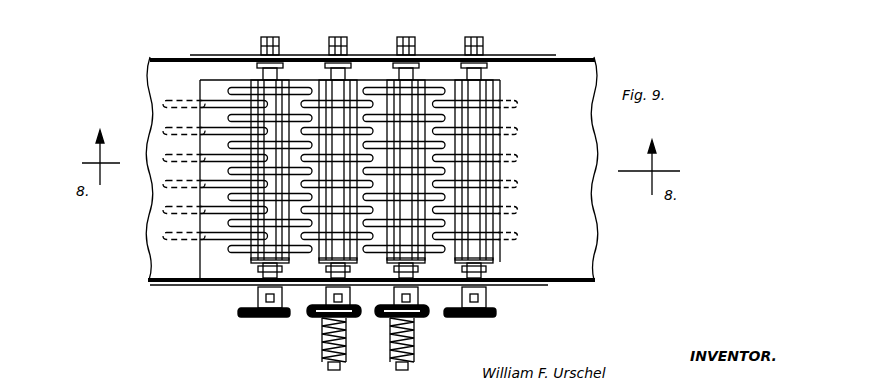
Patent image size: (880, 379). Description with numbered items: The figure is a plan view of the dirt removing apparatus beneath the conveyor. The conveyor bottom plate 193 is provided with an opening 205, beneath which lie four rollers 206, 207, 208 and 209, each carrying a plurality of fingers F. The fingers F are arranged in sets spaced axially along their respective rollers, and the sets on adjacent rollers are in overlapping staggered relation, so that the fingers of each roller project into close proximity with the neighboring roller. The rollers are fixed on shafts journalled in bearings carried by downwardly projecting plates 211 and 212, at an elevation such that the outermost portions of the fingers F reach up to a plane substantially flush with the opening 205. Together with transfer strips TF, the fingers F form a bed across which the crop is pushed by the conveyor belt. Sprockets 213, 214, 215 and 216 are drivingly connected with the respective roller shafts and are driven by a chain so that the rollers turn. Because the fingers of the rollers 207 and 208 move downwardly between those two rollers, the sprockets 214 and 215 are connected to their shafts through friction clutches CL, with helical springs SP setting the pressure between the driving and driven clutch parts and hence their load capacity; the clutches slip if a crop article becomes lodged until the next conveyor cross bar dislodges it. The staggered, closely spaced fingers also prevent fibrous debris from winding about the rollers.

The conveyor bottom plate 193 is at (150, 76).
The opening 205 is at (221, 80).
The roller 206 is at (286, 82).
The roller 207 is at (352, 80).
The roller 208 is at (418, 82).
The roller 209 is at (493, 82).
The downwardly projecting plate 211 is at (541, 288).
The downwardly projecting plate 212 is at (546, 57).
The sprocket 213 is at (238, 313).
The sprocket 214 is at (316, 318).
The sprocket 215 is at (395, 320).
The sprocket 216 is at (452, 319).
The fingers F is at (434, 84).
The transfer strips TF is at (162, 213).
The friction clutch CL is at (320, 309).
The helical spring SP is at (324, 345).